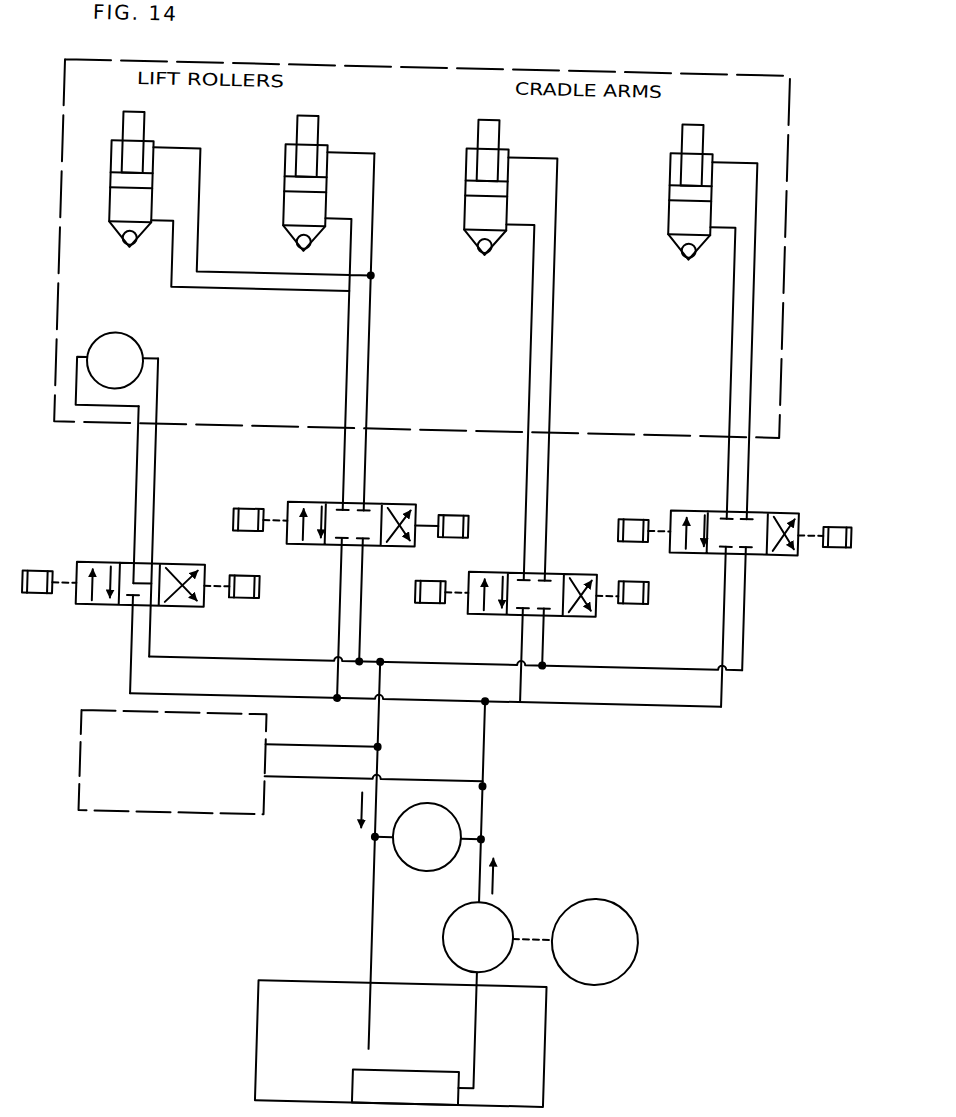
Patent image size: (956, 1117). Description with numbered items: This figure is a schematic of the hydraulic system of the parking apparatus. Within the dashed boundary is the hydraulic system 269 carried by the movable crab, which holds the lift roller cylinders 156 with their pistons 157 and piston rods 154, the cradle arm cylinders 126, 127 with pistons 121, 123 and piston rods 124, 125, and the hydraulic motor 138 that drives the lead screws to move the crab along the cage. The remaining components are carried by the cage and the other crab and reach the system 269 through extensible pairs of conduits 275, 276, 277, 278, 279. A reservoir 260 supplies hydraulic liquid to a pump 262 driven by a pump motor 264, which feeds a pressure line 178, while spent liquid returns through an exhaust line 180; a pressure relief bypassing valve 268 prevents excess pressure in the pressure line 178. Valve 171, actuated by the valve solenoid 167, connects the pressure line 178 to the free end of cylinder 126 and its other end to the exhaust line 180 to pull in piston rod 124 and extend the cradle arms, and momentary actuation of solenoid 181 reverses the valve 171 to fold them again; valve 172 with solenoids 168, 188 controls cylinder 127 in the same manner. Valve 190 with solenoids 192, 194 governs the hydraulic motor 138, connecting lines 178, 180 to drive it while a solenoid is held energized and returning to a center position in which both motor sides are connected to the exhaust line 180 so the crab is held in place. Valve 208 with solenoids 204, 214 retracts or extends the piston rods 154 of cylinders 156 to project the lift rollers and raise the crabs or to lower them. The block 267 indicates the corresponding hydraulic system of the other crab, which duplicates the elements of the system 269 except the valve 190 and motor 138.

The hydraulic system 269 is at (377, 60).
The piston rods 154 is at (290, 117).
The hydraulic cylinders 156 is at (283, 147).
The pistons 157 is at (283, 186).
The piston rod 124 is at (470, 119).
The hydraulic cylinder 126 is at (459, 148).
The piston 121 is at (459, 183).
The piston rod 125 is at (674, 119).
The hydraulic cylinder 127 is at (663, 148).
The piston 123 is at (663, 184).
The hydraulic motor 138 is at (136, 347).
The extensible conduits 277 is at (284, 301).
The extensible conduits 275 is at (132, 451).
The extensible conduits 276 is at (339, 445).
The extensible conduits 278 is at (523, 441).
The extensible conduits 279 is at (723, 443).
The valve 208 is at (335, 495).
The solenoid 214 is at (237, 523).
The solenoid 204 is at (457, 513).
The valve 190 is at (123, 618).
The solenoid 192 is at (53, 578).
The solenoid 194 is at (251, 600).
The valve 171 is at (515, 620).
The solenoid 181 is at (434, 601).
The valve solenoid 167 is at (644, 597).
The valve 172 is at (720, 500).
The solenoid 188 is at (641, 513).
The valve solenoid 168 is at (834, 516).
The exhaust line 180 is at (391, 722).
The pressure line 178 is at (497, 724).
The block 267 is at (129, 822).
The pressure relief bypassing valve 268 is at (410, 851).
The pump 262 is at (520, 909).
The pump motor 264 is at (636, 903).
The reservoir 260 is at (334, 982).